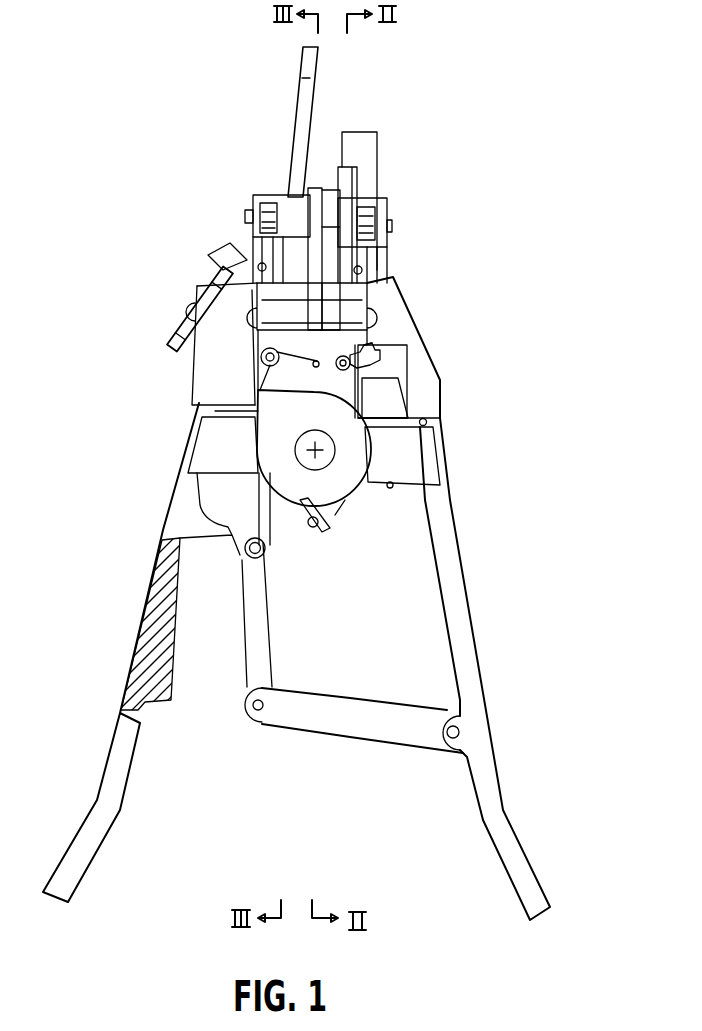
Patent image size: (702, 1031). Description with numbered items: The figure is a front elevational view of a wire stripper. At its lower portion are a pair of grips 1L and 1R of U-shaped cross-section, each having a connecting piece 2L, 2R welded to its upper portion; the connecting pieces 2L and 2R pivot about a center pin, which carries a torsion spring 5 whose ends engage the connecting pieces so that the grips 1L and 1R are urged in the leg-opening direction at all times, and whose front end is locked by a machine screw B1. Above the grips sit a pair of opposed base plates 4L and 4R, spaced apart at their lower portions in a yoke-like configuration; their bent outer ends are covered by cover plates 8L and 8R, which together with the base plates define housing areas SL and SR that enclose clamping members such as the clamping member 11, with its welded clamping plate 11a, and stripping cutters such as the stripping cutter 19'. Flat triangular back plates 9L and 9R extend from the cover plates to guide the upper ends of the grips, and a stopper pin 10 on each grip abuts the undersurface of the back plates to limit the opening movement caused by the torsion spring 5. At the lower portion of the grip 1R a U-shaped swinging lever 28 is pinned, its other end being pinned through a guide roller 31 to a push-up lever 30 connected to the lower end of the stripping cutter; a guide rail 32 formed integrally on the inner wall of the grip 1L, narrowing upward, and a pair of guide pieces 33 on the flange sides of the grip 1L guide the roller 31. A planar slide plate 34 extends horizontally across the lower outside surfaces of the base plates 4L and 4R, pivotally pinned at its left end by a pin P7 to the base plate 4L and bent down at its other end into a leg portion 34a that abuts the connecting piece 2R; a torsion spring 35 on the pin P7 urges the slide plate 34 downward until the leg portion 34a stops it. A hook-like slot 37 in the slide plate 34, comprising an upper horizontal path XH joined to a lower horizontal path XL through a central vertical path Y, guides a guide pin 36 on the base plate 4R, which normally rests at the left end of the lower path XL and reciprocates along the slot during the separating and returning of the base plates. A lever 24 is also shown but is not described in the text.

The stripping cutter 19' is at (286, 122).
The base plate 4L is at (318, 185).
The base plate 4R is at (330, 187).
The clamping plate 11a is at (370, 143).
The clamping member 11 is at (347, 183).
The housing area SL is at (287, 283).
The housing area SR is at (347, 277).
The cover plate 8L is at (240, 284).
The cover plate 8R is at (360, 313).
The lever 24 is at (170, 331).
The guide pin 36 is at (350, 355).
The upper horizontal path XH is at (380, 352).
The back plate 9L is at (200, 362).
The back plate 9R is at (412, 343).
The slot 37 is at (380, 356).
The slide plate 34 is at (402, 365).
The pin P7 is at (262, 362).
The central vertical path Y is at (410, 402).
The torsion spring 35 is at (260, 380).
The leg portion 34a is at (440, 417).
The connecting piece 2L is at (200, 455).
The stopper pin 10 is at (427, 427).
The lower horizontal path XL is at (355, 400).
The machine screw B1 is at (327, 460).
The connecting piece 2R is at (402, 478).
The torsion spring 5 is at (333, 532).
The guide piece 33 is at (172, 525).
The push-up lever 30 is at (262, 618).
The guide rail 32 is at (165, 655).
The grip 1L is at (100, 788).
The guide roller 31 is at (258, 727).
The swinging lever 28 is at (358, 735).
The grip 1R is at (495, 780).